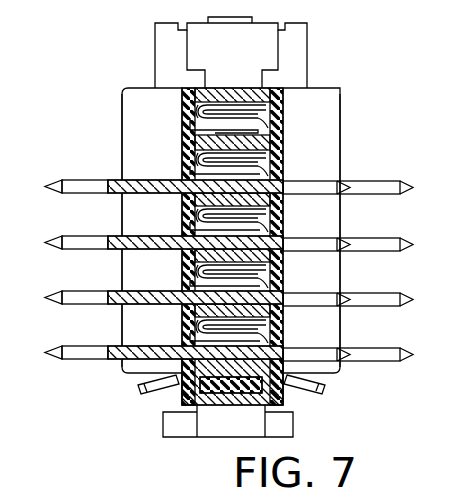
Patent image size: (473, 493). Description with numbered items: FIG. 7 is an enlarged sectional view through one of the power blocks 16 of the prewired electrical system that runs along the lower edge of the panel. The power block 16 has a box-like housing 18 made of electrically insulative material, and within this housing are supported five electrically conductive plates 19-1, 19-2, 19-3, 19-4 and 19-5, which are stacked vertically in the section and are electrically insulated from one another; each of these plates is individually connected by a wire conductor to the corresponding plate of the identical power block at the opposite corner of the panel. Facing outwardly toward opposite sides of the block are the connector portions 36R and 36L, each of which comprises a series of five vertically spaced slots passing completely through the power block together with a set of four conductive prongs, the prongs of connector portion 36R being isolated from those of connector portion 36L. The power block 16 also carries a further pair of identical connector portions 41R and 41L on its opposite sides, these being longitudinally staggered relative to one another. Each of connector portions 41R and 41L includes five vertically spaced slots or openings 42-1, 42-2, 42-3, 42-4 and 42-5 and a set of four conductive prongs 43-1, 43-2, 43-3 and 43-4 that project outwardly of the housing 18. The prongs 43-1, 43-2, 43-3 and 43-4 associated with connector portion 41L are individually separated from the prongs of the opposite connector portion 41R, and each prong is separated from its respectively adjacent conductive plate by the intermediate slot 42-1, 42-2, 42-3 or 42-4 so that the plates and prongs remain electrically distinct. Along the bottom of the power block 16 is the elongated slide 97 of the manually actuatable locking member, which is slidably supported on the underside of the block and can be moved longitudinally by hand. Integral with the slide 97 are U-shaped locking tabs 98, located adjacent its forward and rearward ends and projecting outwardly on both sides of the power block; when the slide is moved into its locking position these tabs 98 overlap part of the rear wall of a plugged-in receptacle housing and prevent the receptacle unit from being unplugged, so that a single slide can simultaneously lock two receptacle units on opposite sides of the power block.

The power block 16 is at (412, 110).
The housing 18 is at (125, 110).
The connector portion 41L is at (114, 155).
The connector portion 41R is at (348, 382).
The connector portion 36L is at (149, 269).
The connector portion 36R is at (426, 315).
The conductive prong 43-1 is at (140, 354).
The conductive prong 43-2 is at (118, 305).
The conductive prong 43-3 is at (118, 250).
The conductive prong 43-4 is at (125, 186).
The conductive plate 19-1 is at (283, 338).
The conductive plate 19-2 is at (283, 283).
The conductive plate 19-3 is at (283, 226).
The conductive plate 19-4 is at (283, 166).
The conductive plate 19-5 is at (283, 122).
The slot 42-1 is at (193, 338).
The slot 42-2 is at (193, 284).
The slot 42-3 is at (193, 227).
The slot 42-4 is at (193, 171).
The slot 42-5 is at (190, 124).
The elongated slide 97 is at (208, 400).
The locking tab 98 is at (140, 392).